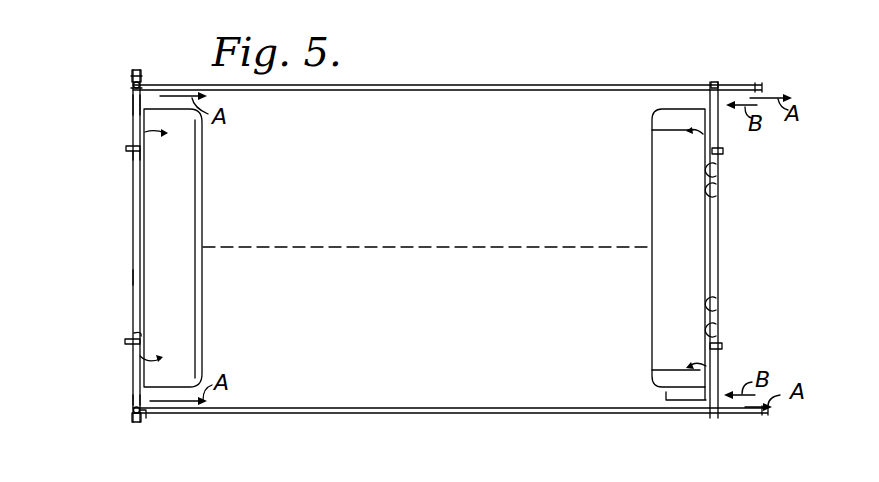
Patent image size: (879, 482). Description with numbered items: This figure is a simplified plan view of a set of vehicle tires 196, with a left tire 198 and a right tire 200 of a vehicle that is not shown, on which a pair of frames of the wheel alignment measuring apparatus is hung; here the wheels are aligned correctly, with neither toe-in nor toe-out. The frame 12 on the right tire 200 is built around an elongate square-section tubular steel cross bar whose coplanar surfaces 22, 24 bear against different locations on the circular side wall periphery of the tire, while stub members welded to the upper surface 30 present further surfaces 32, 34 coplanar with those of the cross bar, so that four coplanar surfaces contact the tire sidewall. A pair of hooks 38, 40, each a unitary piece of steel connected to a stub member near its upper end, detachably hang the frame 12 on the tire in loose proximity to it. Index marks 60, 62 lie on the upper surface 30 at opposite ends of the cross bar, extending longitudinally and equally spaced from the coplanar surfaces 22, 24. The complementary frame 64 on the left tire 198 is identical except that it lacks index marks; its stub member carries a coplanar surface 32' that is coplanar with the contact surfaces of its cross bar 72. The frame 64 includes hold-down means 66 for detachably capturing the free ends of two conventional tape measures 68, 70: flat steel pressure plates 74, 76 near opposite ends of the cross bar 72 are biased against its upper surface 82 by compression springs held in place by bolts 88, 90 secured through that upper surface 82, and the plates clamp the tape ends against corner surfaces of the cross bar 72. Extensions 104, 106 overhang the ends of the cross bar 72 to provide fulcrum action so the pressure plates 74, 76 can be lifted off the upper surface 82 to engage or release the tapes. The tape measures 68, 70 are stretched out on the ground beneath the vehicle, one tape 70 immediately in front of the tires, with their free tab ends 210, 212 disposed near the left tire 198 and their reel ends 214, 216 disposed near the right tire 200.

The frame 12 is at (726, 153).
The coplanar surface 22 is at (716, 305).
The coplanar surface 24 is at (716, 192).
The upper surface 30 is at (718, 252).
The surface 32 is at (733, 334).
The coplanar surface 32' is at (108, 331).
The surface 34 is at (716, 172).
The hook 38 is at (654, 370).
The hook 40 is at (656, 131).
The index mark 60 is at (666, 392).
The index mark 62 is at (709, 97).
The complementary frame 64 is at (120, 149).
The hold-down means 66 is at (133, 68).
The tape measure 68 is at (477, 407).
The tape measure 70 is at (492, 83).
The cross bar 72 is at (126, 277).
The pressure plate 74 is at (134, 405).
The pressure plate 76 is at (136, 104).
The upper surface 82 is at (133, 243).
The bolt 88 is at (142, 414).
The bolt 90 is at (131, 84).
The extension 104 is at (135, 419).
The extension 106 is at (139, 72).
The set of vehicle tires 196 is at (455, 147).
The left tire 198 is at (187, 207).
The right tire 200 is at (645, 248).
The tab end 210 is at (133, 411).
The tab end 212 is at (132, 88).
The reel end 214 is at (763, 413).
The reel end 216 is at (762, 70).